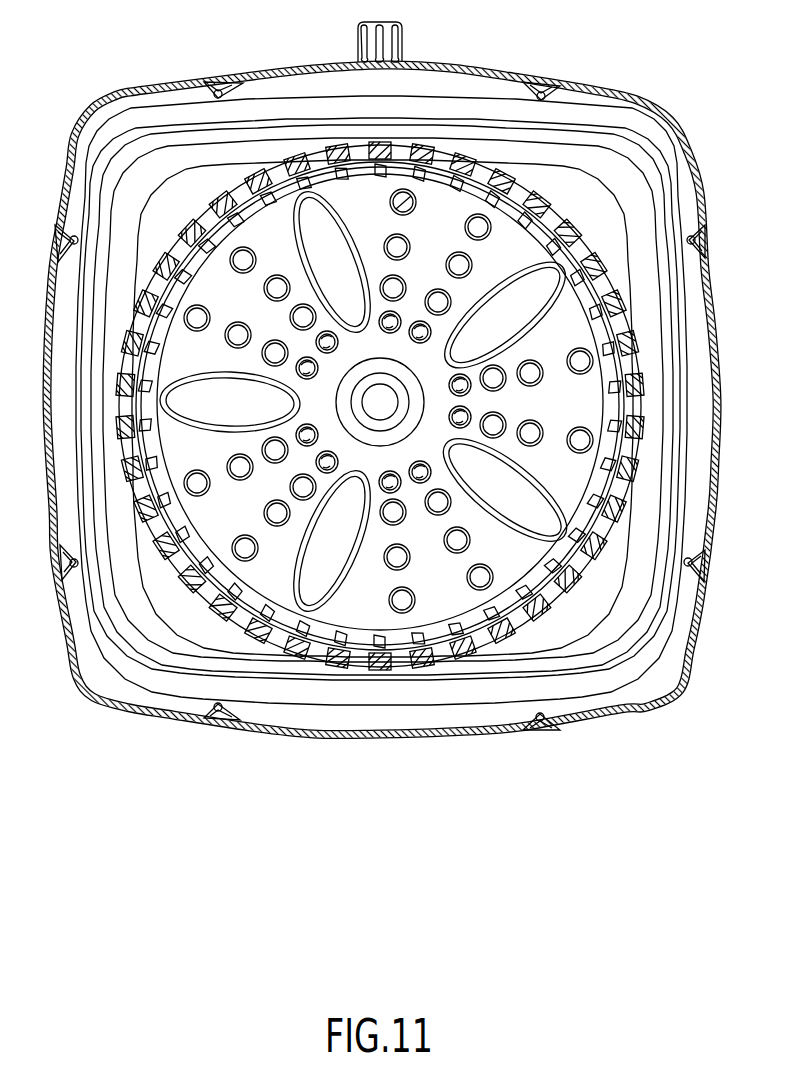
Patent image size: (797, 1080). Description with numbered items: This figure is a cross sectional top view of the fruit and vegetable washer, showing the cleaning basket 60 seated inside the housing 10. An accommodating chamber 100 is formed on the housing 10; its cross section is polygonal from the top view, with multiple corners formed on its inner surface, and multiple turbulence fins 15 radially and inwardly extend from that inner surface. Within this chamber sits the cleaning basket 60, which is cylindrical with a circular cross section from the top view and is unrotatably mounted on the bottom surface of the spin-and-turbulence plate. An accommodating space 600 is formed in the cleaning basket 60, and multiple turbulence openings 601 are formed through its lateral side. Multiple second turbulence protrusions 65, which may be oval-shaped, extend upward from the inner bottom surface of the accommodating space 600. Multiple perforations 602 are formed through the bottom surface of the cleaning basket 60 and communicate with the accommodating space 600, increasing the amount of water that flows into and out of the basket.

The housing 10 is at (725, 402).
The accommodating chamber 100 is at (700, 318).
The turbulence fins 15 is at (222, 88).
The cleaning basket 60 is at (555, 613).
The accommodating space 600 is at (447, 605).
The turbulence openings 601 is at (172, 560).
The perforations 602 is at (252, 557).
The second turbulence protrusions 65 is at (347, 230).